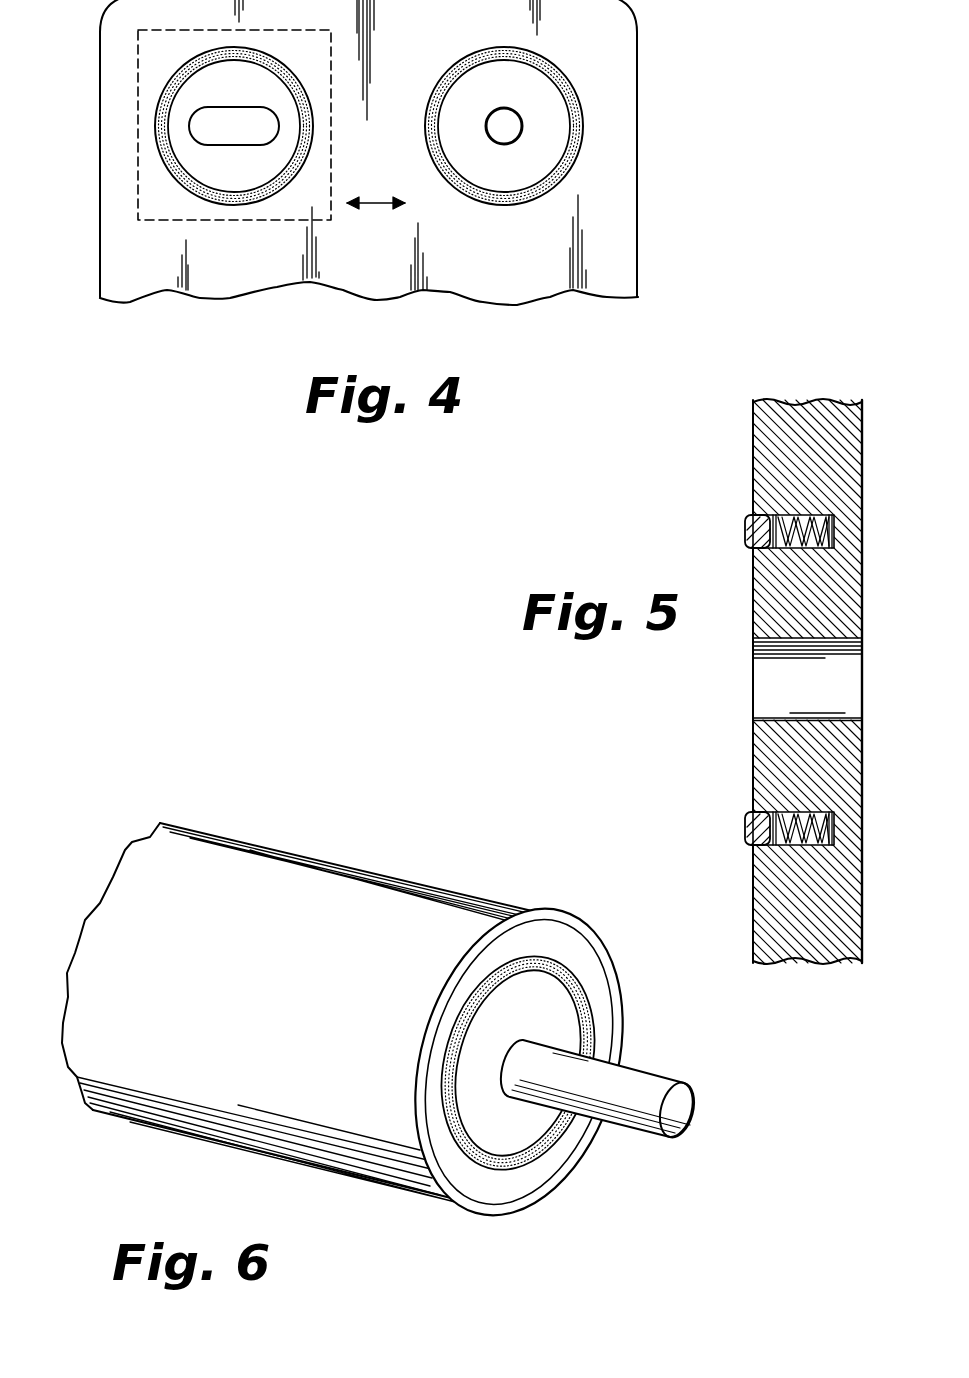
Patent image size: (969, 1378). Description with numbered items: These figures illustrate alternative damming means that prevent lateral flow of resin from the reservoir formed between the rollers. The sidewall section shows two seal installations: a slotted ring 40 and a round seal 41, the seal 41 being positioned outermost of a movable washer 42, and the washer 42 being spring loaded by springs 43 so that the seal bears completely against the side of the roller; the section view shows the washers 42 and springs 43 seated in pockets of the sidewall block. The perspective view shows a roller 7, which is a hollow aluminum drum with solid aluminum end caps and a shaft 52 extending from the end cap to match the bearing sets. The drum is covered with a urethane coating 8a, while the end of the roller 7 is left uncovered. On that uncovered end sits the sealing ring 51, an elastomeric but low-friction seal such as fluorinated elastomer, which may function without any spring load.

In FIG. 4, the slotted mounting ring 40 is at (234, 126).
In FIG. 4, the seal 41 is at (573, 163).
In FIG. 5, the movable washer 42 is at (765, 513).
In FIG. 5, the springs 43 is at (822, 513).
In FIG. 6, the coating 8a is at (480, 892).
In FIG. 6, the roller 7 is at (568, 952).
In FIG. 6, the sealing ring 51 is at (525, 1174).
In FIG. 6, the shaft 52 is at (600, 1090).